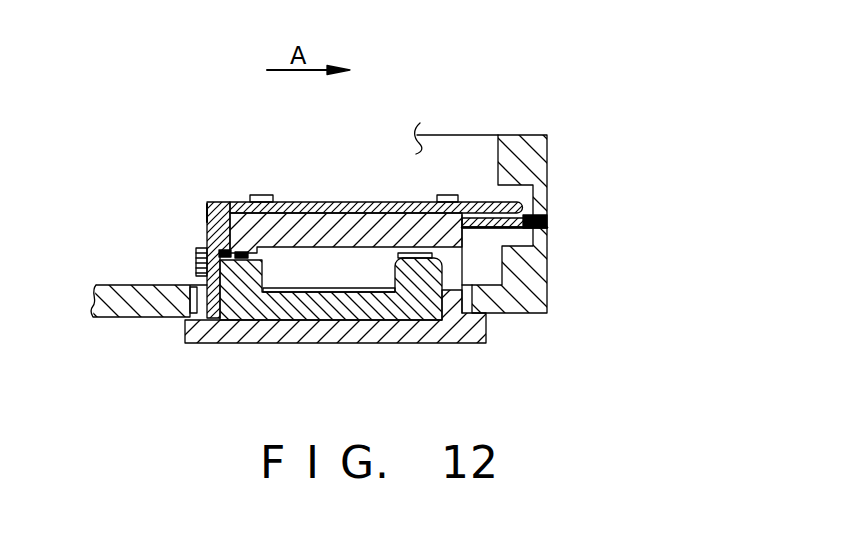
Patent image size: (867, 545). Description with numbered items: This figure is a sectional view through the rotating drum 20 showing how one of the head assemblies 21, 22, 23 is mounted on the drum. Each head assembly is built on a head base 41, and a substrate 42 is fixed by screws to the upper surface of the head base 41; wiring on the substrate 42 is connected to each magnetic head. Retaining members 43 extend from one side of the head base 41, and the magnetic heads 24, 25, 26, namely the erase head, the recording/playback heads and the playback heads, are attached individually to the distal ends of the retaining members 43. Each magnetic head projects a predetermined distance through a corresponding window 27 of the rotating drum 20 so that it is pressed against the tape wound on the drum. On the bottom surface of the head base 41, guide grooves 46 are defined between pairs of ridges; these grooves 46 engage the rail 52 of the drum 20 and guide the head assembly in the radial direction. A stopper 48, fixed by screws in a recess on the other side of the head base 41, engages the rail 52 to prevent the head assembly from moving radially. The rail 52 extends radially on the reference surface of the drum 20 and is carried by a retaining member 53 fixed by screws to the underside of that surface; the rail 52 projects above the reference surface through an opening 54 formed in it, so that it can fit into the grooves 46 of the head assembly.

The rotating drum 20 is at (560, 157).
The head assembly 21 is at (166, 171).
The head assembly 22 is at (365, 226).
The head assembly 23 is at (365, 226).
The erase magnetic head 24 is at (547, 228).
The magnetic recording/playback head 25 is at (504, 223).
The magnetic playback head 26 is at (504, 223).
The window 27 is at (547, 217).
The head base 41 is at (233, 201).
The substrate 42 is at (320, 201).
The retaining member 43 is at (506, 248).
The guide groove 46 is at (225, 258).
The stopper 48 is at (207, 212).
The rail 52 is at (288, 312).
The retaining member 53 is at (372, 343).
The opening 54 is at (207, 313).